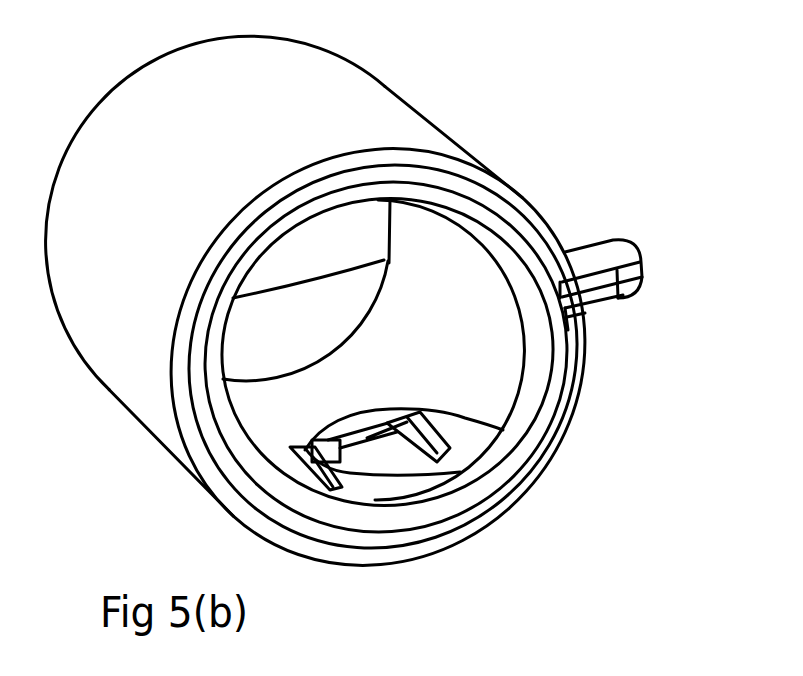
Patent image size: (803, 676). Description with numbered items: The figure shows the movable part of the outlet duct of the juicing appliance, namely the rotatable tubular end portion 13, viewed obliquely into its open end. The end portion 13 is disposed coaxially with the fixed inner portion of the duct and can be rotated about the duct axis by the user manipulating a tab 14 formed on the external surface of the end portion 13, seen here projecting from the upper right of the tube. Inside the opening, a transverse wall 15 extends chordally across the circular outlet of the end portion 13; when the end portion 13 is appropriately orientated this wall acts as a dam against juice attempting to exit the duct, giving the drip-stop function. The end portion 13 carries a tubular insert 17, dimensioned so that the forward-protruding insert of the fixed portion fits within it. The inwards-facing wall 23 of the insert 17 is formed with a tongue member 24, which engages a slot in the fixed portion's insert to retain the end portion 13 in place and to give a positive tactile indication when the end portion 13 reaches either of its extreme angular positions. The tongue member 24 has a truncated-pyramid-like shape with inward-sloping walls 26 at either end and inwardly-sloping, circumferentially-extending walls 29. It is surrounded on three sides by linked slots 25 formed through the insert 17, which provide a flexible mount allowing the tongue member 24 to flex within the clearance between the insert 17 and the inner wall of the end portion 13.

The rotatable tubular end portion 13 is at (556, 83).
The tab 14 is at (633, 252).
The transverse wall 15 is at (317, 248).
The insert 17 is at (532, 387).
The inwards-facing wall 23 is at (510, 343).
The tongue member 24 is at (385, 427).
The linked slots 25 is at (477, 424).
The inward-sloping end wall 26 is at (345, 472).
The inwardly-sloping circumferentially-extending wall 29 is at (375, 455).